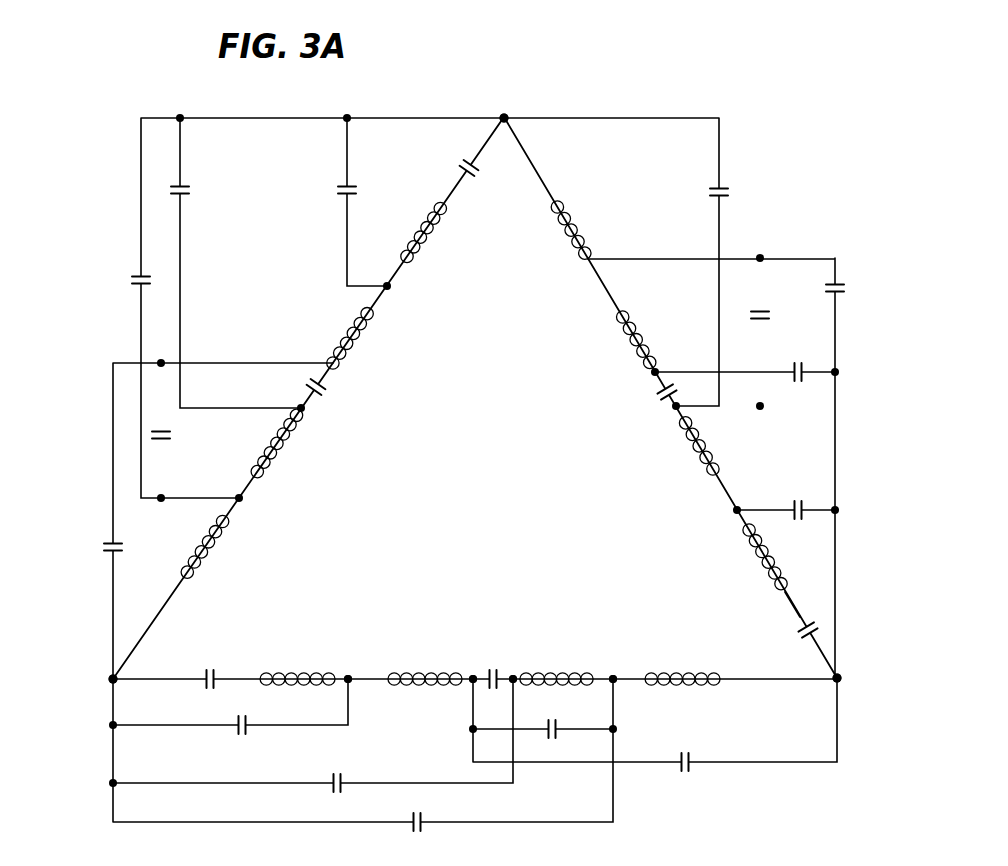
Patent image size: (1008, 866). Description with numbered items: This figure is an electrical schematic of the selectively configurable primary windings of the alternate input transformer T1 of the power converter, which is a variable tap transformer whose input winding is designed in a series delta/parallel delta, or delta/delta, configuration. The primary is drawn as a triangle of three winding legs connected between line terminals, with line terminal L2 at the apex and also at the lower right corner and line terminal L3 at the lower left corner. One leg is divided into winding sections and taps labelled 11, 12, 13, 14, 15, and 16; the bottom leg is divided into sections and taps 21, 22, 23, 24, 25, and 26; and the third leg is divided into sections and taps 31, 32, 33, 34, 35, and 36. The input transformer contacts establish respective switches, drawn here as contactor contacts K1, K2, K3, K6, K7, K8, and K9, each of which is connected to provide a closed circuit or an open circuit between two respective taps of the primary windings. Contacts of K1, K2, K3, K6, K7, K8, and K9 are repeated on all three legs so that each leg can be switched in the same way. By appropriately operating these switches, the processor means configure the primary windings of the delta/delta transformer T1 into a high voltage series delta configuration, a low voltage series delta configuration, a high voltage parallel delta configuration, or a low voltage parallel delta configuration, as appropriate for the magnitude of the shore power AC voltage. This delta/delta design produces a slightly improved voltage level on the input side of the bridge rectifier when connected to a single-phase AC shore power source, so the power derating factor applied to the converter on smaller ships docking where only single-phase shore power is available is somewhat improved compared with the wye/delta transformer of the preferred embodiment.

The input transformer T1 is at (475, 398).
The line terminal L2 is at (838, 678).
The line terminal L3 is at (112, 679).
The primary winding section 11 is at (554, 225).
The primary winding section 12 is at (614, 323).
The winding tap 13 is at (635, 378).
The primary winding section 14 is at (681, 438).
The primary winding section 15 is at (743, 548).
The winding tap 16 is at (778, 604).
The primary winding section 21 is at (693, 664).
The winding tap 22 is at (612, 663).
The primary winding section 23 is at (544, 664).
The primary winding section 24 is at (437, 664).
The winding tap 25 is at (349, 663).
The primary winding section 26 is at (287, 664).
The primary winding section 31 is at (205, 566).
The primary winding section 32 is at (269, 465).
The winding tap 33 is at (318, 418).
The primary winding section 34 is at (350, 350).
The winding tap 35 is at (404, 290).
The primary winding section 36 is at (443, 227).
The contactor K1 is at (521, 475).
The contactor K2 is at (416, 492).
The contactor K3 is at (489, 566).
The contactor K6 is at (492, 485).
The contactor K7 is at (505, 438).
The contactor K8 is at (479, 521).
The contactor K9 is at (491, 549).